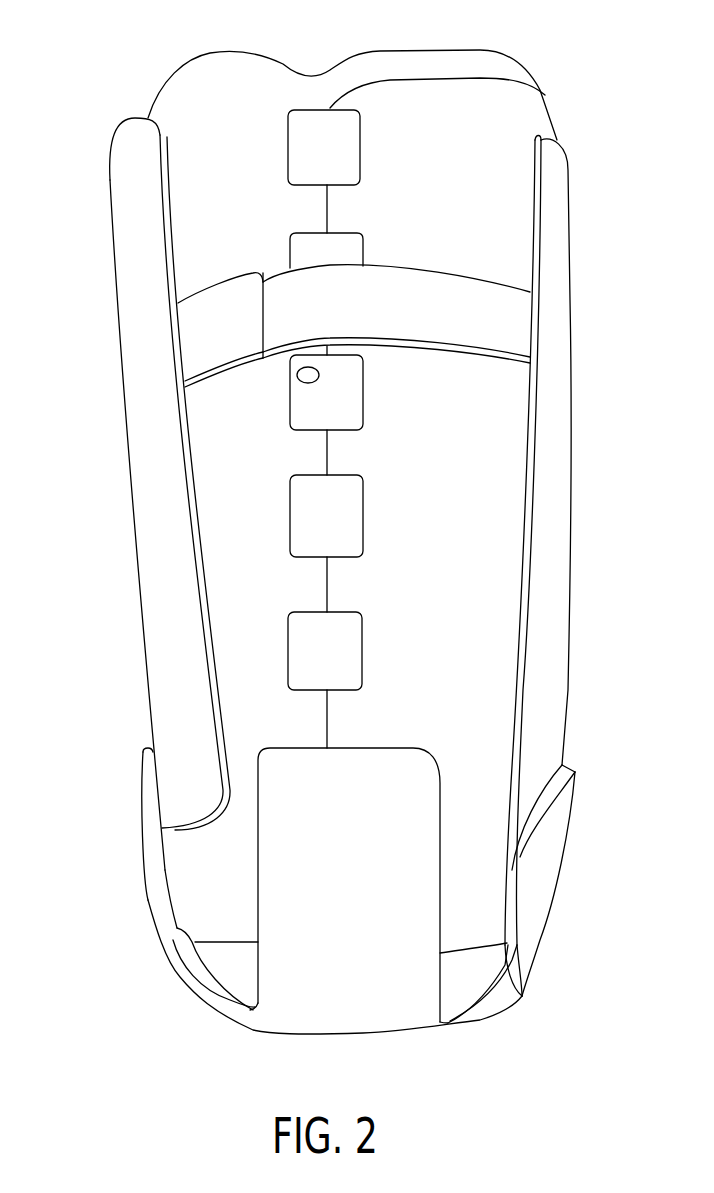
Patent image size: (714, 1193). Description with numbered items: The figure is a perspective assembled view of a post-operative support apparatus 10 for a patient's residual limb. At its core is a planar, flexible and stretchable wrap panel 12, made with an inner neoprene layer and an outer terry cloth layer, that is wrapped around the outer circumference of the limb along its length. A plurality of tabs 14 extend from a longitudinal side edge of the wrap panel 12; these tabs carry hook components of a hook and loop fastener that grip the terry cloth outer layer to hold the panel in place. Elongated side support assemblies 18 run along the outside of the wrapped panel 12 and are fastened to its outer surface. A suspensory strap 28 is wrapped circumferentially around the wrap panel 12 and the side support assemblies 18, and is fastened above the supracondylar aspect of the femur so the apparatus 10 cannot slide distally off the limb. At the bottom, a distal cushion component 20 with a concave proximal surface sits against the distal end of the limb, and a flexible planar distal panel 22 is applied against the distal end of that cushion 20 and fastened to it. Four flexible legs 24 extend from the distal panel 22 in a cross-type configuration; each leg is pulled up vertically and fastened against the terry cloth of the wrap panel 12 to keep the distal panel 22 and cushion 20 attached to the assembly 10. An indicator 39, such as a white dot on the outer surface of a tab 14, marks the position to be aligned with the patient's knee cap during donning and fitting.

The post-operative support apparatus 10 is at (118, 84).
The wrap panel 12 is at (257, 70).
The tabs 14 is at (300, 148).
The elongated side support assemblies 18 is at (148, 503).
The distal cushion component 20 is at (213, 975).
The distal panel 22 is at (297, 1027).
The legs 24 is at (410, 762).
The suspensory strap 28 is at (452, 283).
The indicator 39 is at (308, 366).